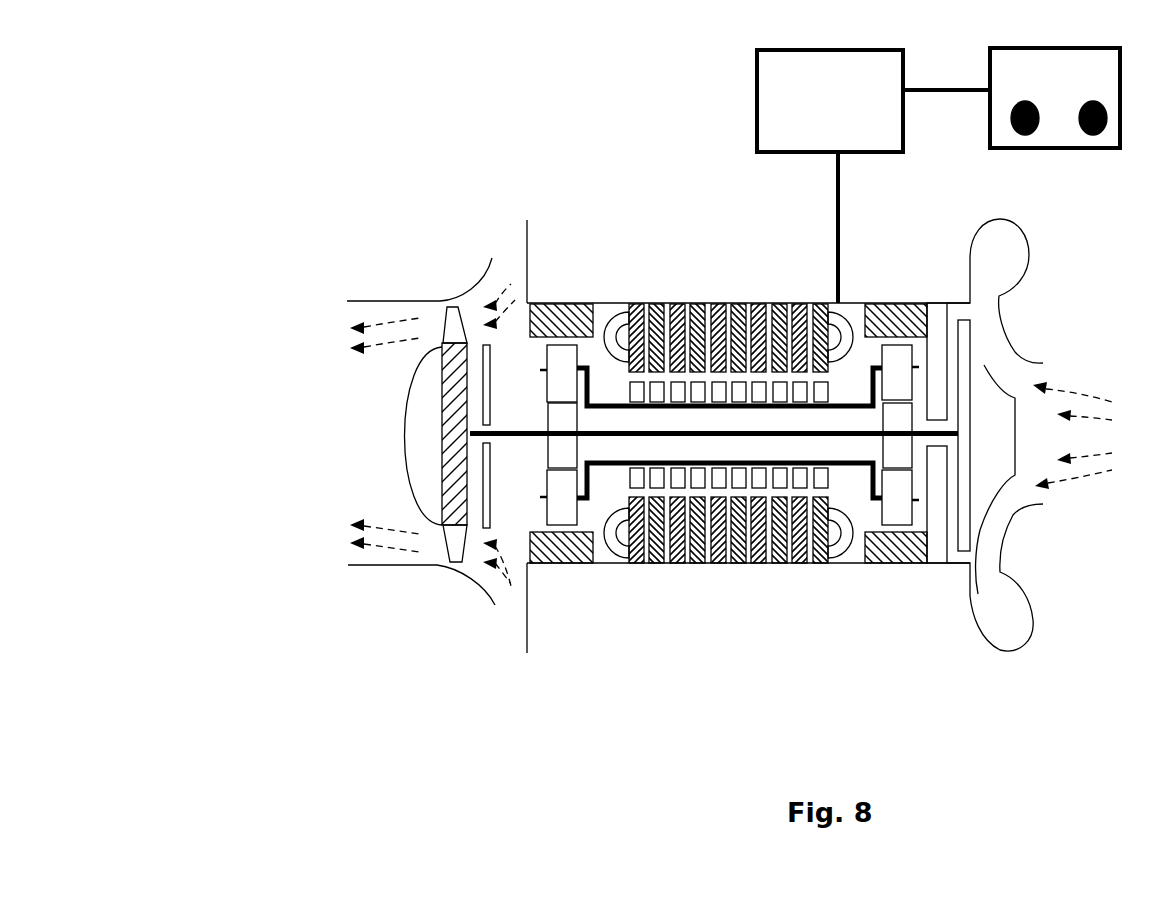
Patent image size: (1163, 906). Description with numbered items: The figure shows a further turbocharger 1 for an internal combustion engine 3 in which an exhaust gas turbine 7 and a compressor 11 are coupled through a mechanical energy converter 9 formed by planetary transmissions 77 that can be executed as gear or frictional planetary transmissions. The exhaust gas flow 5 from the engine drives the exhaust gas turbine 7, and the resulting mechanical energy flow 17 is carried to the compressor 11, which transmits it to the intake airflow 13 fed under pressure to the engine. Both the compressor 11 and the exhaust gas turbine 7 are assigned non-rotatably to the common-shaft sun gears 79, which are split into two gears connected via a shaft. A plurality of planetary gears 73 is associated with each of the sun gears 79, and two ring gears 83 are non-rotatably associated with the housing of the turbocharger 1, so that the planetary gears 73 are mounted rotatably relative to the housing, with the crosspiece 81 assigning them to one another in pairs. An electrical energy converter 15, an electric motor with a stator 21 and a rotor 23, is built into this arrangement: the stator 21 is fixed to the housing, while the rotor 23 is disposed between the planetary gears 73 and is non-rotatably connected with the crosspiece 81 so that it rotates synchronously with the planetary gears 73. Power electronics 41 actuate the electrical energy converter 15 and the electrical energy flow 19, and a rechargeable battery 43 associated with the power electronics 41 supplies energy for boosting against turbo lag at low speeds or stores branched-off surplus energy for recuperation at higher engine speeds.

The turbocharger 1 is at (311, 199).
The internal combustion engine 3 is at (1103, 354).
The exhaust gas flow 5 is at (376, 478).
The exhaust gas turbine 7 is at (428, 443).
The mechanical energy converter 9 is at (543, 513).
The compressor 11 is at (999, 611).
The intake airflow 13 is at (1160, 457).
The electrical energy converter 15 is at (643, 564).
The mechanical energy flow 17 is at (531, 424).
The electrical energy flow 19 is at (700, 294).
The stator 21 is at (740, 303).
The rotor 23 is at (690, 473).
The power electronics 41 is at (783, 97).
The rechargeable battery 43 is at (1065, 127).
The planetary gears 73 is at (900, 385).
The planetary transmission 77 is at (902, 350).
The sun gears 79 is at (557, 430).
The crosspiece 81 is at (853, 463).
The ring gears 83 is at (597, 303).